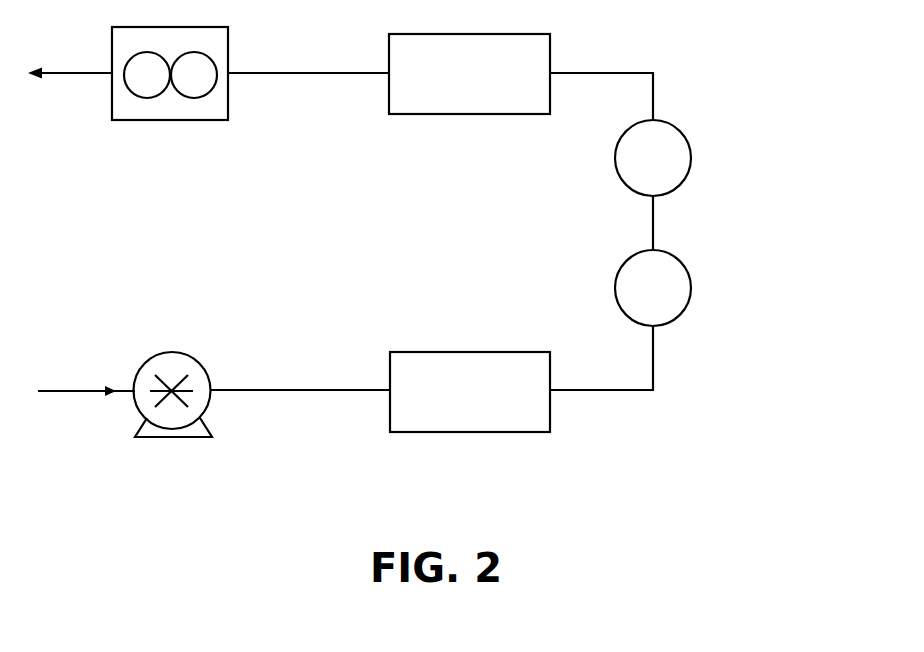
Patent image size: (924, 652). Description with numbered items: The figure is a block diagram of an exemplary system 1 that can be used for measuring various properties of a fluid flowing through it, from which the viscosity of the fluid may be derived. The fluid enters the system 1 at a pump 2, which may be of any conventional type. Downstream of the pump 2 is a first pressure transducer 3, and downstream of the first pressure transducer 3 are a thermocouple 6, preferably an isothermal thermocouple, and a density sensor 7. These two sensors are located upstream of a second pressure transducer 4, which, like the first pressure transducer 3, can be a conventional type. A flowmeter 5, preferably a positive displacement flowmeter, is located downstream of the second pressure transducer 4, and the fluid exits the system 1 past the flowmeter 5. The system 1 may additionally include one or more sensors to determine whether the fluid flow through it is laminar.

The system 1 is at (340, 232).
The pump 2 is at (173, 426).
The first pressure transducer 3 is at (471, 424).
The second pressure transducer 4 is at (462, 108).
The flowmeter 5 is at (170, 105).
The thermocouple 6 is at (730, 158).
The density sensor 7 is at (734, 288).